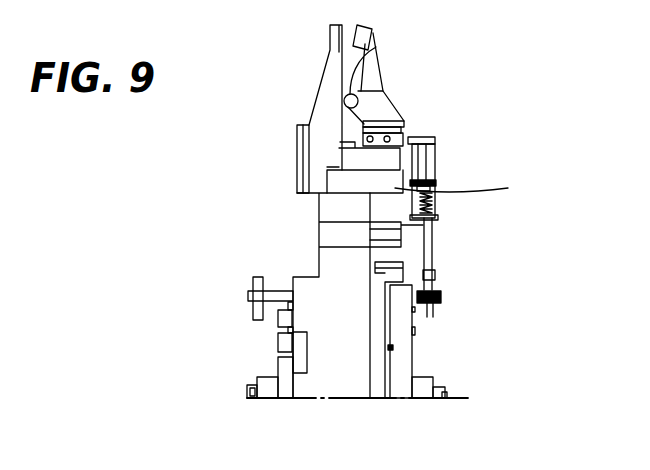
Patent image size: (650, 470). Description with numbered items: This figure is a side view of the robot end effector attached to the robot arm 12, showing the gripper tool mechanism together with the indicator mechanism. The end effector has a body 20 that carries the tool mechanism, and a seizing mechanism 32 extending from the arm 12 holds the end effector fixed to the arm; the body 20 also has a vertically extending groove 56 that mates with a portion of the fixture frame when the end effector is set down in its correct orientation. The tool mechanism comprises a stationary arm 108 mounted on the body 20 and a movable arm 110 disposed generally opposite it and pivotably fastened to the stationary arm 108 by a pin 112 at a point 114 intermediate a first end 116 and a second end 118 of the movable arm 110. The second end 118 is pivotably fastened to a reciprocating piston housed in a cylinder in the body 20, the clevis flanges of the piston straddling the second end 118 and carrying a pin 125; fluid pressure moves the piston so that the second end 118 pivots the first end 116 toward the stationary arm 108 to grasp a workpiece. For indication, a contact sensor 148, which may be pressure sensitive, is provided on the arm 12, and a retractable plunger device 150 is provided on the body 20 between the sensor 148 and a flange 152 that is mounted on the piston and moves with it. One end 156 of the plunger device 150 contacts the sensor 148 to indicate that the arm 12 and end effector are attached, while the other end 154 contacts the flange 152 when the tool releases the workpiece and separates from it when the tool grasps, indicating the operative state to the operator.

The robot arm 12 is at (322, 383).
The body 20 is at (464, 186).
The seizing mechanism 32 is at (319, 225).
The groove 56 is at (305, 125).
The stationary arm 108 is at (327, 70).
The movable arm 110 is at (388, 96).
The pin 112 is at (344, 100).
The point 114 is at (371, 47).
The first end 116 is at (377, 57).
The second end 118 is at (403, 129).
The pin 125 is at (407, 136).
The contact sensor 148 is at (441, 293).
The retractable plunger device 150 is at (437, 201).
The flange 152 is at (436, 141).
The end 154 is at (434, 163).
The end 156 is at (440, 259).